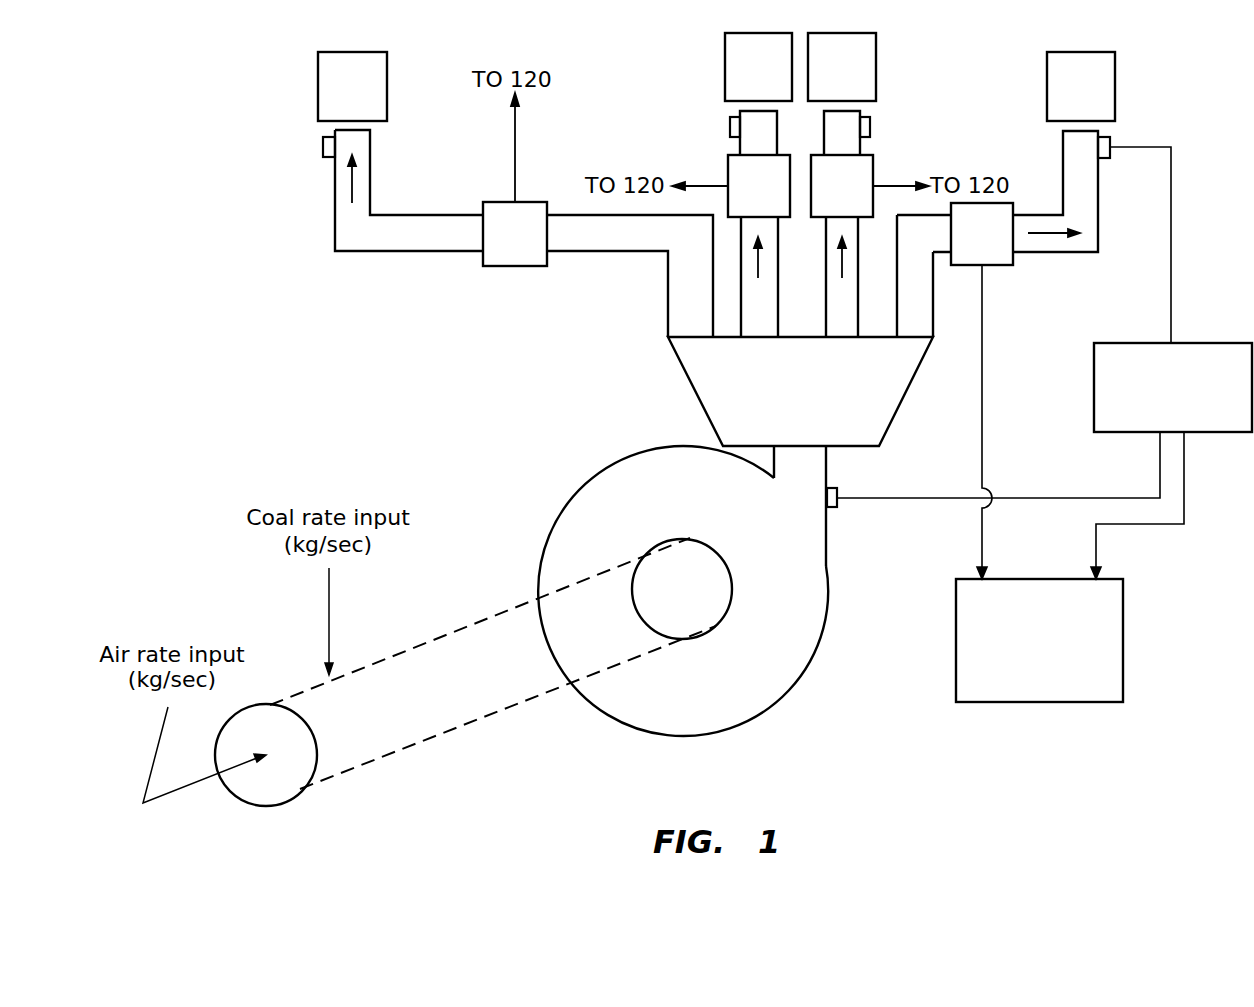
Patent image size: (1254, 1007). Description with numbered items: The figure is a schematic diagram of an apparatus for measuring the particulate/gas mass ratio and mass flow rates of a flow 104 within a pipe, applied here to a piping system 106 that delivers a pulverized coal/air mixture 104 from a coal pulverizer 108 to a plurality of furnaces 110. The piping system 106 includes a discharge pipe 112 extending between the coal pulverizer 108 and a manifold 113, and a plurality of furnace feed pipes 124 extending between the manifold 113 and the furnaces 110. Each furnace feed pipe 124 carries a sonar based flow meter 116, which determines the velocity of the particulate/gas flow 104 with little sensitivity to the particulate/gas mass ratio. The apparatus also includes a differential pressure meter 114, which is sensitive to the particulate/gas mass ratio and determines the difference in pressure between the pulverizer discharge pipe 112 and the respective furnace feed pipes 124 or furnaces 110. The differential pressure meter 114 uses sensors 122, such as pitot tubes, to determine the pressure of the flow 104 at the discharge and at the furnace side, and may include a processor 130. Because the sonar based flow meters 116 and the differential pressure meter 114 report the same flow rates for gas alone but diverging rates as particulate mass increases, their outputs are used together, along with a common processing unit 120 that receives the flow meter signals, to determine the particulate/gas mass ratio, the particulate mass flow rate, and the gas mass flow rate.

The flow 104 is at (347, 187).
The piping system 106 is at (456, 380).
The coal pulverizer 108 is at (768, 680).
The furnaces 110 is at (334, 99).
The discharge pipe 112 is at (812, 471).
The manifold 113 is at (888, 395).
The differential pressure meter 114 is at (1194, 327).
The sonar based flow meter 116 is at (497, 246).
The processing unit 120 is at (1021, 691).
The sensors 122 is at (320, 147).
The furnace feed pipes 124 is at (755, 320).
The processor 130 is at (1222, 435).